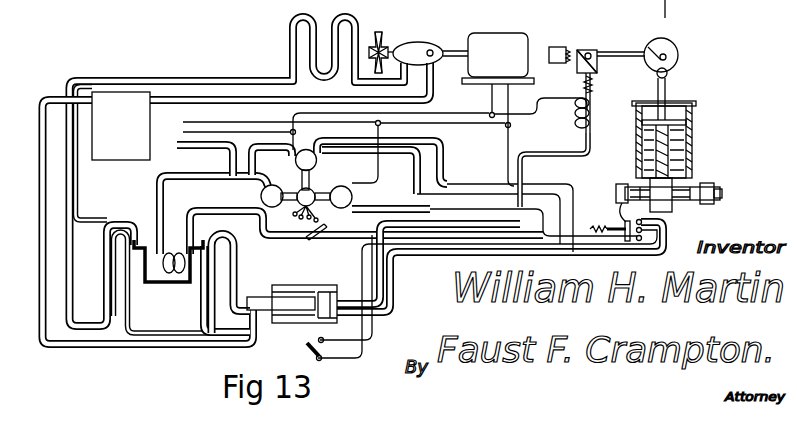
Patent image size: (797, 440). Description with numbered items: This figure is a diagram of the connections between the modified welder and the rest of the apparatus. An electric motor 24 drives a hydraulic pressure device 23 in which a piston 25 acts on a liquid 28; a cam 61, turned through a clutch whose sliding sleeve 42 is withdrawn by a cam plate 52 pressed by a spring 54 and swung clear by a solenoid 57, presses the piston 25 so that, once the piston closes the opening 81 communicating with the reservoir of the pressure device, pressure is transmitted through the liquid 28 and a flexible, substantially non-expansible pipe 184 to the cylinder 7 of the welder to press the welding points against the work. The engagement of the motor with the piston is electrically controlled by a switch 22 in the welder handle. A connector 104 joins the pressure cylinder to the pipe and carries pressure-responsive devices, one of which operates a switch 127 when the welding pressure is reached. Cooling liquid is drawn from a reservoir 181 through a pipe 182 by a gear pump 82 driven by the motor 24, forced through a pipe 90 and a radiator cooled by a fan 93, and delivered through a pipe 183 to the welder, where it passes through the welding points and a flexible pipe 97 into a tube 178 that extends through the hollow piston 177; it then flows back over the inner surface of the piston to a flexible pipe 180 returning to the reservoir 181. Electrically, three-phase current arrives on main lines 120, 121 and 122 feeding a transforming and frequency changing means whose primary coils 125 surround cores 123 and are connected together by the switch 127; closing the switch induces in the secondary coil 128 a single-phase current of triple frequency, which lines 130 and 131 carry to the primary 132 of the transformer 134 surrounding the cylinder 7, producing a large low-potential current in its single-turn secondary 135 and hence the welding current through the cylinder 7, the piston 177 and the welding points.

The flexible pipe 97 is at (289, 41).
The fan 93 is at (379, 35).
The gear pump 82 is at (419, 50).
The pipe 90 is at (408, 80).
The pipe 182 is at (433, 101).
The electric motor 24 is at (508, 43).
The sleeve 42 is at (586, 51).
The cam plate 52 is at (580, 68).
The spring 54 is at (593, 85).
The solenoid 57 is at (592, 111).
The cam 61 is at (673, 49).
The piston 25 is at (686, 133).
The hydraulic pressure device 23 is at (692, 141).
The opening 81 is at (695, 153).
The liquid 28 is at (692, 168).
The connector 104 is at (671, 204).
The switch 127 is at (614, 227).
The main line 122 is at (181, 124).
The main line 121 is at (183, 132).
The main line 120 is at (195, 144).
The line 130 is at (174, 179).
The line 131 is at (192, 217).
The primary coils 125 is at (273, 185).
The cores 123 is at (261, 196).
The secondary coil 128 is at (297, 215).
The reservoir 181 is at (123, 150).
The pipe 183 is at (73, 217).
The transformer 134 is at (158, 284).
The primary 132 is at (176, 275).
The secondary 135 is at (170, 286).
The tube 178 is at (268, 297).
The cylinder 7 is at (291, 287).
The piston 177 is at (310, 302).
The flexible pipe 184 is at (422, 253).
The switch 22 is at (306, 351).
The flexible pipe 180 is at (165, 349).